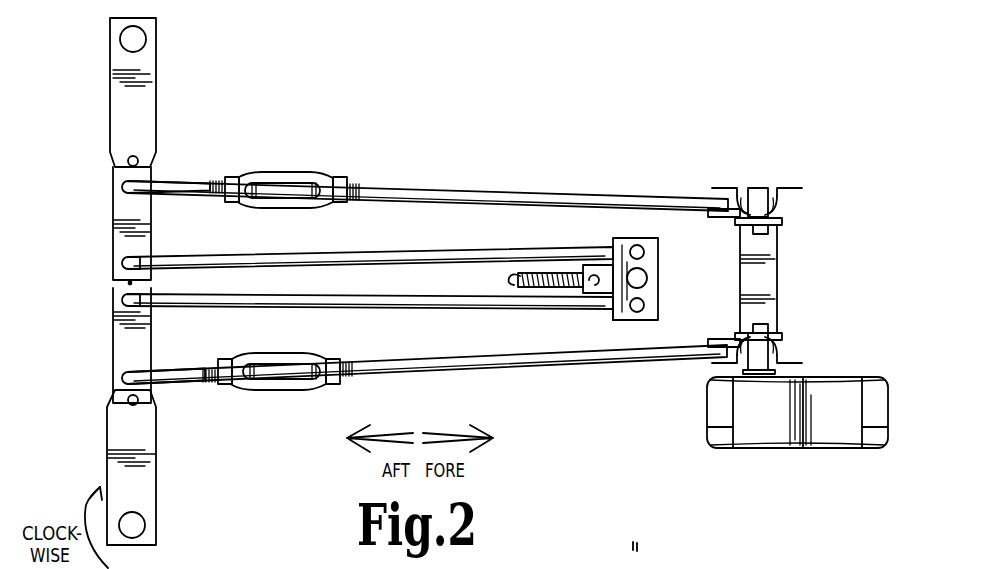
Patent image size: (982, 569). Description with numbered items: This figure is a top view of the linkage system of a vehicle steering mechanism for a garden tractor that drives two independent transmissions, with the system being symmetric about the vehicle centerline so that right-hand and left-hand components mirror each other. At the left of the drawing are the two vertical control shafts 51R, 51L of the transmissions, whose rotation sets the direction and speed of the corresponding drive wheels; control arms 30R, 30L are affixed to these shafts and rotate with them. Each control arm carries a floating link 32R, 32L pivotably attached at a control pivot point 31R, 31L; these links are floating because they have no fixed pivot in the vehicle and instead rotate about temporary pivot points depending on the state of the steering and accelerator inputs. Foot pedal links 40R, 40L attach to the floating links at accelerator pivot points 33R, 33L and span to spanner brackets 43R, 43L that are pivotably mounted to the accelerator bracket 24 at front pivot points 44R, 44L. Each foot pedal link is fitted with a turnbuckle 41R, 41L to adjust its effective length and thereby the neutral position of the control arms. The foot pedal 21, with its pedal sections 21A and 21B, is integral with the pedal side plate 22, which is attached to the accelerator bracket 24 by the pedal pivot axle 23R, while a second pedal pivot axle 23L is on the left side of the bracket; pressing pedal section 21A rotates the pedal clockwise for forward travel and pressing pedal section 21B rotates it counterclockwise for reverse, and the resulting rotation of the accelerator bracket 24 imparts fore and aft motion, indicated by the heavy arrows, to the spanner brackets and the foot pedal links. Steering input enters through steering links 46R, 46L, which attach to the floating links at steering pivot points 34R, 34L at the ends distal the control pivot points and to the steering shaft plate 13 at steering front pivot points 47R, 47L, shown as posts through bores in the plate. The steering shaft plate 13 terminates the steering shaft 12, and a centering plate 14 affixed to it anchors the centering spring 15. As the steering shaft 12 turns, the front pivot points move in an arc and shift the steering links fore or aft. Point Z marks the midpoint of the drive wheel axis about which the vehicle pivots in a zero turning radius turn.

The control arm 30L is at (150, 82).
The control arm 30R is at (148, 470).
The vertical control shaft 51L is at (145, 40).
The vertical control shaft 51R is at (135, 525).
The control pivot point 31L is at (138, 160).
The control pivot point 31R is at (138, 405).
The floating link 32L is at (113, 234).
The floating link 32R is at (115, 350).
The accelerator pivot point 33L is at (128, 186).
The accelerator pivot point 33R is at (125, 380).
The steering pivot point 34L is at (125, 263).
The steering pivot point 34R is at (125, 300).
The point Z is at (128, 283).
The foot pedal link 40L is at (395, 170).
The foot pedal link 40R is at (392, 383).
The turnbuckle 41L is at (250, 172).
The turnbuckle 41R is at (292, 390).
The steering link 46L is at (339, 248).
The steering link 46R is at (340, 317).
The centering spring 15 is at (535, 274).
The centering plate 14 is at (600, 268).
The steering shaft 12 is at (648, 278).
The steering shaft plate 13 is at (618, 322).
The steering front pivot point 47L is at (637, 246).
The steering front pivot point 47R is at (637, 312).
The spanner bracket 43L is at (712, 218).
The spanner bracket 43R is at (712, 338).
The pedal pivot axle 23L is at (760, 195).
The pedal pivot axle 23R is at (768, 355).
The accelerator bracket 24 is at (770, 266).
The front pivot point 44L is at (775, 232).
The front pivot point 44R is at (775, 327).
The pedal side plate 22 is at (804, 407).
The foot pedal 21 is at (805, 449).
The pedal section 21A is at (875, 416).
The pedal section 21B is at (720, 416).